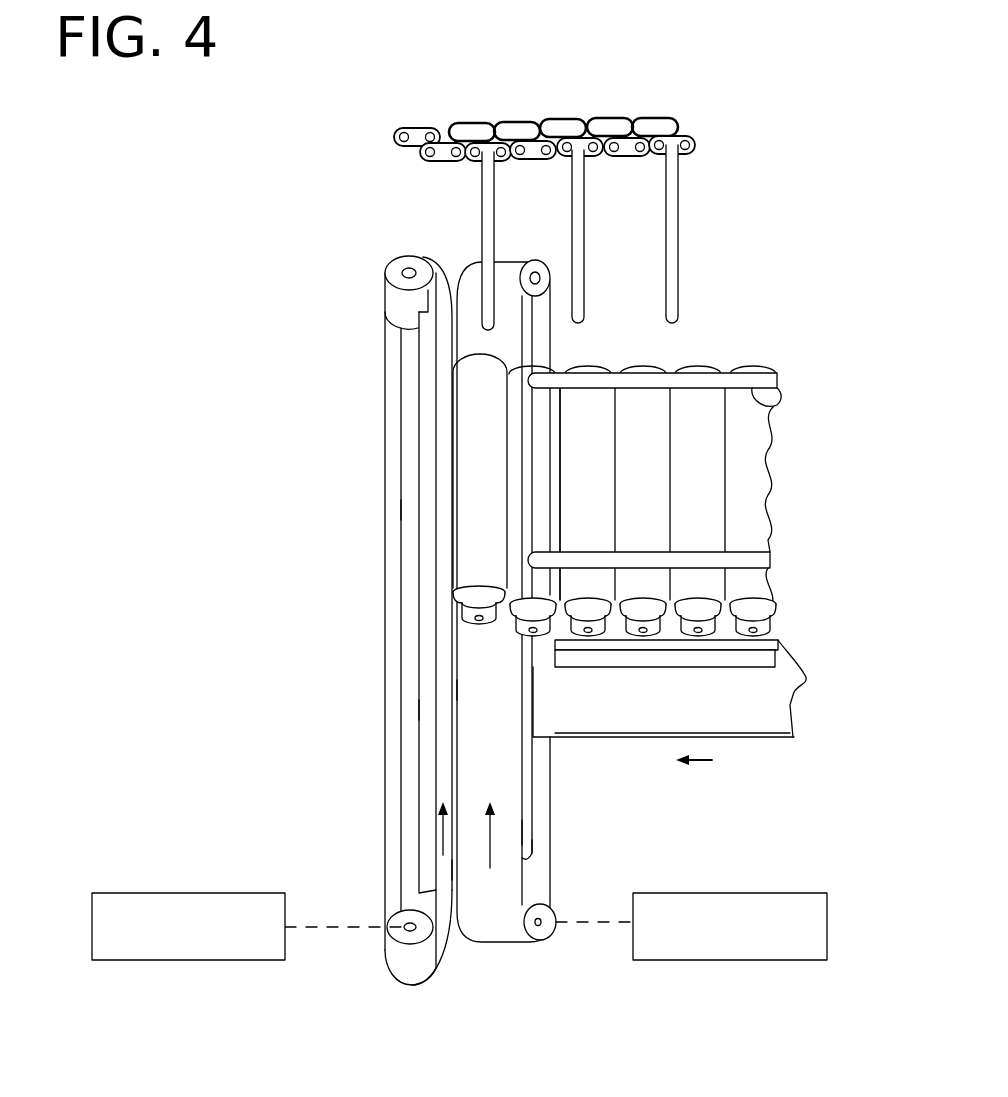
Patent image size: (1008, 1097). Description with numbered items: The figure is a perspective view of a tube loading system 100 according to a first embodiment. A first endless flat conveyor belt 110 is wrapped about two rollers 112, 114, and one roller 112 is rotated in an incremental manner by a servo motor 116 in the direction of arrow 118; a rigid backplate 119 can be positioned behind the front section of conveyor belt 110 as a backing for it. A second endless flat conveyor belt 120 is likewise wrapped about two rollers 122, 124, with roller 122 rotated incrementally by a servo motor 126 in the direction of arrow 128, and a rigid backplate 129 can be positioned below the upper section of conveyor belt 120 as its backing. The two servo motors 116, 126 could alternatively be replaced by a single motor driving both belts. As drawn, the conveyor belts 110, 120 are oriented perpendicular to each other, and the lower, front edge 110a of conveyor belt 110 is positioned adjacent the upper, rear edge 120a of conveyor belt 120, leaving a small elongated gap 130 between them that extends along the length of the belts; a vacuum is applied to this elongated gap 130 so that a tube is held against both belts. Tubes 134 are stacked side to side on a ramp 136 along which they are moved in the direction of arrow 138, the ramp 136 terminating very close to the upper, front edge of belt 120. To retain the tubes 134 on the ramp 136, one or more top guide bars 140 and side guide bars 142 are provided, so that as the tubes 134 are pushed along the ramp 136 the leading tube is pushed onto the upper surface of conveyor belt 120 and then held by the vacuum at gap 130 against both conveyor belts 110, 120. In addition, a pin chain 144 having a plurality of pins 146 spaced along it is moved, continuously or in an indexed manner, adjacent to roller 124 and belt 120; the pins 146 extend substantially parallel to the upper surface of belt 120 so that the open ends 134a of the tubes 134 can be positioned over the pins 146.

The tube loading system 100 is at (792, 243).
The first endless flat conveyor belt 110 is at (392, 489).
The lower, front edge of conveyor belt 110a is at (450, 950).
The roller 112 is at (418, 937).
The roller 114 is at (391, 268).
The servo motor 116 is at (200, 893).
The arrow 118 is at (440, 822).
The rigid backplate 119 is at (428, 388).
The second endless flat conveyor belt 120 is at (500, 767).
The upper, rear edge of conveyor belt 120a is at (457, 688).
The roller 122 is at (538, 940).
The roller 124 is at (537, 265).
The servo motor 126 is at (828, 918).
The arrow 128 is at (495, 838).
The rigid backplate 129 is at (530, 848).
The elongated gap 130 is at (452, 888).
The tubes 134 is at (647, 405).
The open ends of tubes 134a is at (575, 368).
The ramp 136 is at (773, 720).
The arrow 138 is at (706, 772).
The top guide bars 140 is at (768, 410).
The side guide bars 142 is at (748, 658).
The pin chain 144 is at (597, 127).
The pins 146 is at (686, 218).